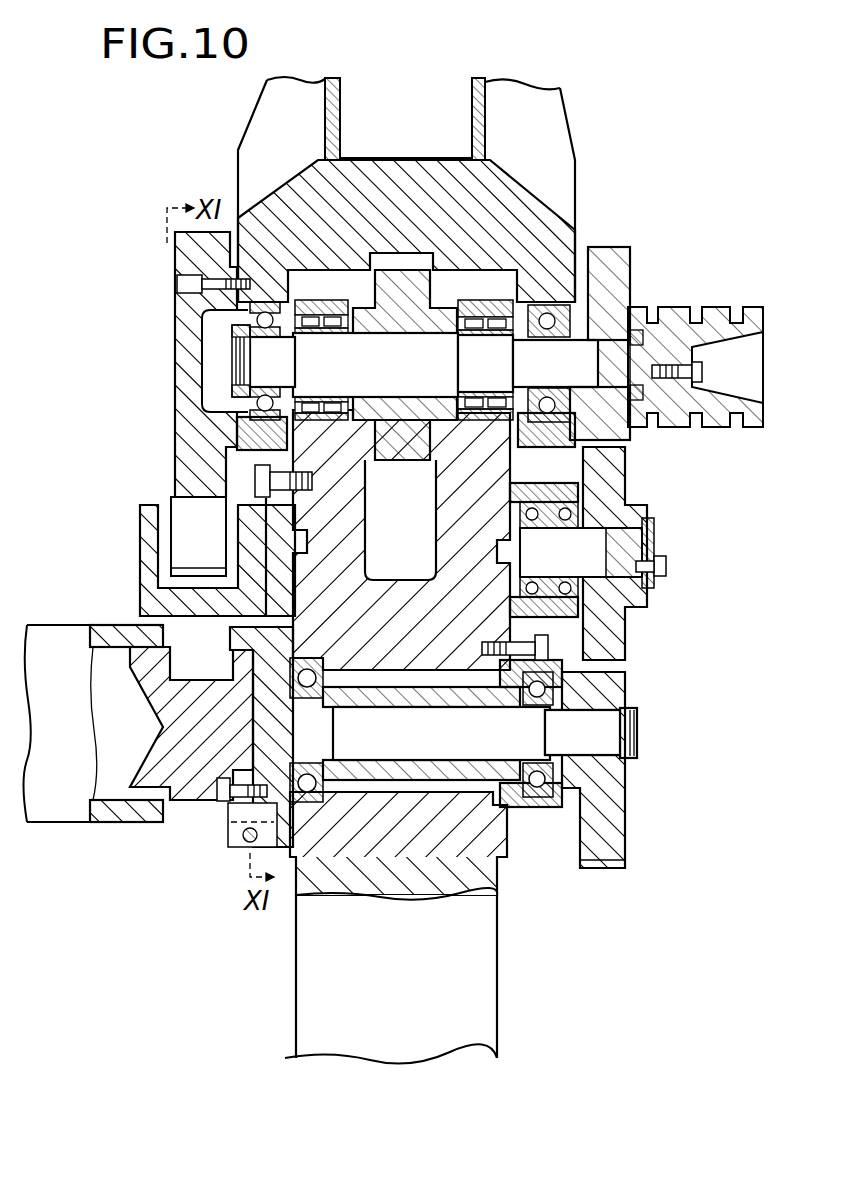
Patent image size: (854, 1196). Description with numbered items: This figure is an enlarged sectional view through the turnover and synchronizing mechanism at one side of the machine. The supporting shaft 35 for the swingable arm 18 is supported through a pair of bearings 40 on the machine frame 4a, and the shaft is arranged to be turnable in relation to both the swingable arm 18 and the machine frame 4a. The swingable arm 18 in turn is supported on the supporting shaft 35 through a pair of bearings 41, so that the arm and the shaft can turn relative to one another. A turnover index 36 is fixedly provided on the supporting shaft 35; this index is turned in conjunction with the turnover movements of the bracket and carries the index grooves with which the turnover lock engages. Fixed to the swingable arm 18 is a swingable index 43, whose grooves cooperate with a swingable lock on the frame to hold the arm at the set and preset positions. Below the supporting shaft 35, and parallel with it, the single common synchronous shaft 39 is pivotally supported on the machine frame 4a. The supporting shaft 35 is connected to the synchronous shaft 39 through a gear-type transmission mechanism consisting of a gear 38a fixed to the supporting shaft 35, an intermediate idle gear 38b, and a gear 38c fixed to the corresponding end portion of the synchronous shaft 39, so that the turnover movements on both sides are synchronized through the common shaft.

The swingable arm 18 is at (405, 100).
The turnover index 36 is at (397, 285).
The bearings 40 is at (317, 312).
The bearings 41 is at (575, 310).
The supporting shaft 35 is at (262, 357).
The swingable index 43 is at (183, 312).
The gear 38a is at (610, 248).
The intermediate idle gear 38b is at (612, 478).
The gear 38c is at (615, 842).
The synchronous shaft 39 is at (103, 815).
The machine frame 4a is at (312, 988).